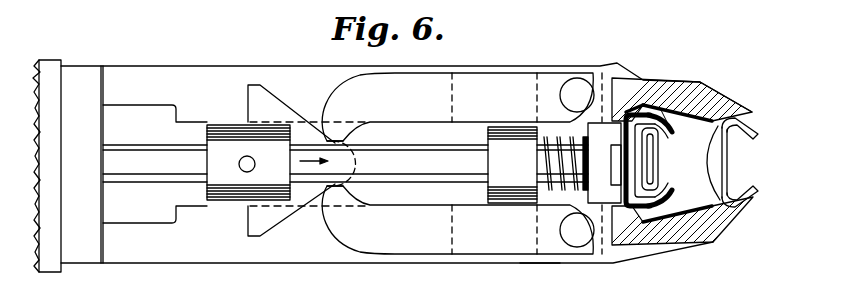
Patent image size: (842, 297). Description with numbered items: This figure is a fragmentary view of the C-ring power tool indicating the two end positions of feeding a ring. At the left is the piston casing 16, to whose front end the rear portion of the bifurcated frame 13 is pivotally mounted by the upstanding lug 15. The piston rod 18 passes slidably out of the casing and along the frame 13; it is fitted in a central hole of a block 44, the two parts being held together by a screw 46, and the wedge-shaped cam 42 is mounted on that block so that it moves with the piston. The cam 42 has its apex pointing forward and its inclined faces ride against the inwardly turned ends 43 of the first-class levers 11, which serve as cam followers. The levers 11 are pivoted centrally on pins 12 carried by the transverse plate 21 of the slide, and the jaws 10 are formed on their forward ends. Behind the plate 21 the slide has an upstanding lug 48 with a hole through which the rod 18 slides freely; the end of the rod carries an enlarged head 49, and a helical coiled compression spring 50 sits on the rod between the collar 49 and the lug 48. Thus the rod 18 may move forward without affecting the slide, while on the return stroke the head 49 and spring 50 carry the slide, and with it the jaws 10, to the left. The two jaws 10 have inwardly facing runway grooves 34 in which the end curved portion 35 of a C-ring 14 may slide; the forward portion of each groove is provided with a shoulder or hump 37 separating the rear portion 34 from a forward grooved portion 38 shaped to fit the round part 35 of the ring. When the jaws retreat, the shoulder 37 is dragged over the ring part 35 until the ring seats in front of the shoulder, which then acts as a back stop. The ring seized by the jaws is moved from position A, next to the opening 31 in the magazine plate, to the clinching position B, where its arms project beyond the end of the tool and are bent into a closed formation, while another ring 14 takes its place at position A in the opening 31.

The jaws 10 is at (692, 81).
The levers 11 is at (482, 101).
The pins 12 is at (577, 162).
The frame 13 is at (300, 264).
The C-ring 14 is at (672, 108).
The upstanding lug 15 is at (81, 245).
The piston casing 16 is at (62, 266).
The piston rod 18 is at (148, 155).
The transverse plate 21 is at (544, 264).
The opening 31 is at (680, 135).
The runway slots or grooves 34 is at (653, 104).
The end curved portion 35 is at (632, 106).
The shoulder or hump 37 is at (713, 112).
The forward grooved portion 38 is at (736, 118).
The wedge-shaped cam 42 is at (284, 102).
The inwardly turned ends 43 is at (348, 137).
The block 44 is at (226, 166).
The screw 46 is at (255, 164).
The upstanding lug 48 is at (506, 174).
The enlarged head 49 is at (597, 123).
The helical coiled compression spring 50 is at (552, 133).
The position A is at (640, 165).
The position B is at (727, 171).